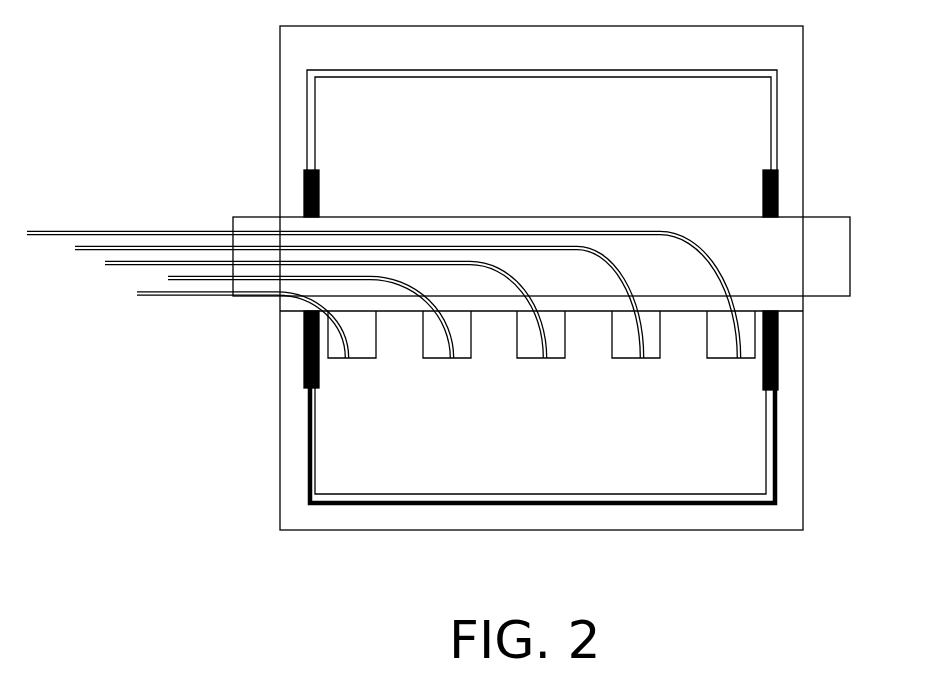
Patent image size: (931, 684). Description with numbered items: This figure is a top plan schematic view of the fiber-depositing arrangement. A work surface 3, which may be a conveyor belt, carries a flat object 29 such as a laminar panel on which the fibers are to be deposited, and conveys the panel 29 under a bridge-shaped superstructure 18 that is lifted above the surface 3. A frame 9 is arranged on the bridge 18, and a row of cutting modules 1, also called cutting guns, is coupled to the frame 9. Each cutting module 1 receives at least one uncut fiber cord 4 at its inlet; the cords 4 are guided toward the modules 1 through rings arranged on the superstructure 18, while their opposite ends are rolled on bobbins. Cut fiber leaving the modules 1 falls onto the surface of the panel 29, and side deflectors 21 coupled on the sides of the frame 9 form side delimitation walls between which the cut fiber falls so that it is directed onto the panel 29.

The cutting module 1 is at (438, 342).
The work surface 3 is at (755, 42).
The fiber cord 4 is at (182, 293).
The frame 9 is at (793, 303).
The bridge-shaped superstructure 18 is at (807, 248).
The side deflector 21 is at (305, 183).
The flat object 29 is at (343, 458).